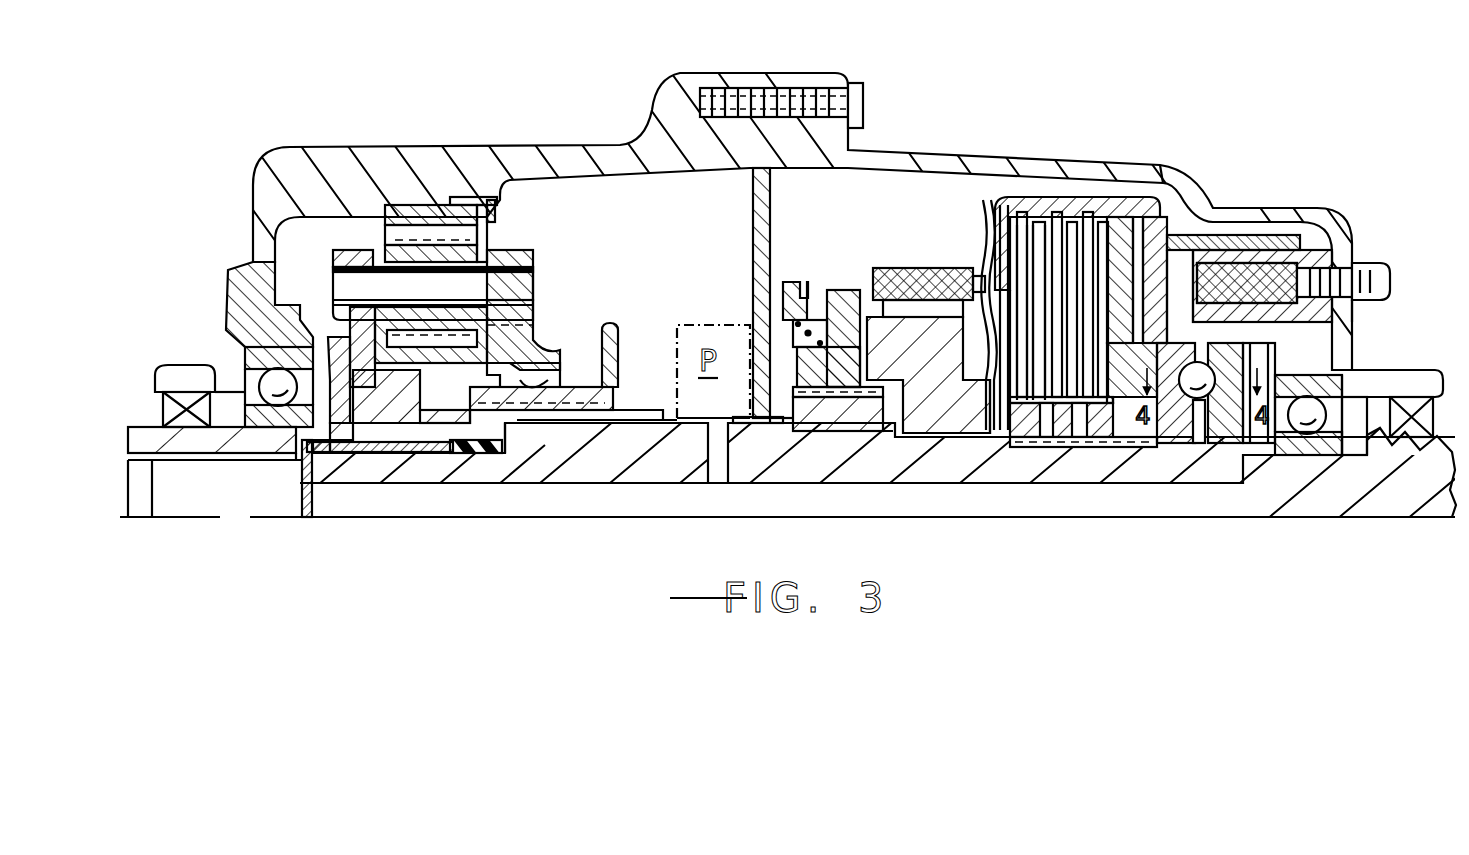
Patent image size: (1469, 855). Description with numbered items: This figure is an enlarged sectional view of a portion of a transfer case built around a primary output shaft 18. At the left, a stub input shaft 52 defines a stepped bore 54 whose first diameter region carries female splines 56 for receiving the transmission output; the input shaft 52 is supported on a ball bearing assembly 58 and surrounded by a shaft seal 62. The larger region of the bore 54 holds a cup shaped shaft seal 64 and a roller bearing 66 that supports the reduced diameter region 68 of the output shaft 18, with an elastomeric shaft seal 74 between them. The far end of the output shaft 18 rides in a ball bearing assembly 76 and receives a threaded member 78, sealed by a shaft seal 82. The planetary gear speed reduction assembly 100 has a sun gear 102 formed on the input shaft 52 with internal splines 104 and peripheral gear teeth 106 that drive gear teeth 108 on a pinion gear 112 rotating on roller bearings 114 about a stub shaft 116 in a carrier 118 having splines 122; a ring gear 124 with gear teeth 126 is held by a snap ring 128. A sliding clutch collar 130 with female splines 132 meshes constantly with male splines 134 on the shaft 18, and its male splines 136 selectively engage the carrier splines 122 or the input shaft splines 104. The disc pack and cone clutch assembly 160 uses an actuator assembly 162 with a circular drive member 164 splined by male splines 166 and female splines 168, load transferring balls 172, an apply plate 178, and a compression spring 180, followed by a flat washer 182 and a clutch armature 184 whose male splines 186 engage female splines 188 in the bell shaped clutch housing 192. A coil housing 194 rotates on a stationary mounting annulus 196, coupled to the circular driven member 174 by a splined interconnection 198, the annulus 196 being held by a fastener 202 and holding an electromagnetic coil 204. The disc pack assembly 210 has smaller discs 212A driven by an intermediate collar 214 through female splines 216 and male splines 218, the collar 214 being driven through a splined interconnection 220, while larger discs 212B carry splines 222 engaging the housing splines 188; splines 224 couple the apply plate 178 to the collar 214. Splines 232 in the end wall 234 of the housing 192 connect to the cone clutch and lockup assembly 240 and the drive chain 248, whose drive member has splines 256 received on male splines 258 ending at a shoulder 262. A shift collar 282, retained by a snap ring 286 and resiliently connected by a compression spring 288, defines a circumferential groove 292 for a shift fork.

The primary output shaft 18 is at (800, 490).
The stub input shaft 52 is at (165, 470).
The stepped bore 54 is at (222, 500).
The female splines or gear teeth 56 is at (245, 455).
The ball bearing assembly 58 is at (235, 300).
The shaft seal 62 is at (152, 397).
The cup shaped shaft seal 64 is at (300, 493).
The roller bearing 66 is at (345, 462).
The reduced diameter region 68 is at (428, 460).
The elastomeric shaft seal 74 is at (490, 470).
The ball bearing assembly 76 is at (1310, 458).
The threaded member 78 is at (1368, 458).
The shaft seal 82 is at (1432, 455).
The planetary gear speed reduction assembly 100 is at (243, 148).
The sun gear 102 is at (415, 445).
The female involute splines or gear teeth 104 is at (352, 422).
The gear teeth 106 is at (535, 307).
The gear teeth 108 is at (505, 268).
The pinion gear 112 is at (515, 292).
The roller bearings 114 is at (485, 245).
The stub shaft 116 is at (340, 290).
The carrier 118 is at (613, 350).
The female involute splines or gear teeth 122 is at (613, 380).
The ring gear 124 is at (410, 205).
The gear teeth 126 is at (443, 245).
The snap ring 128 is at (520, 205).
The sliding clutch collar 130 is at (578, 455).
The female involute splines or gear teeth 132 is at (500, 445).
The male splines or gear teeth 134 is at (625, 422).
The male splines or gear teeth 136 is at (612, 325).
The disc pack and cone clutch assembly 160 is at (1245, 80).
The actuator assembly 162 is at (1290, 190).
The circular drive member 164 is at (1197, 447).
The male splines or gear teeth 166 is at (1158, 447).
The female involute splines or gear teeth 168 is at (1193, 445).
The load transferring balls 172 is at (1230, 445).
The circular driven member 174 is at (1255, 447).
The apply plate 178 is at (1152, 175).
The compression spring 180 is at (1130, 450).
The circular flat washer 182 is at (1212, 220).
The clutch armature 184 is at (1178, 250).
The male splines or gear teeth 186 is at (1160, 230).
The female involute splines or gear teeth 188 is at (1120, 250).
The bell shaped clutch housing 192 is at (1035, 225).
The circular coil housing 194 is at (1300, 240).
The stationary mounting annulus 196 is at (1355, 265).
The splined interconnection 198 is at (1352, 364).
The fastener 202 is at (1385, 292).
The electromagnetic coil 204 is at (1330, 240).
The disc pack assembly 210 is at (1108, 100).
The smaller diameter discs 212A is at (1010, 435).
The larger diameter discs 212B is at (1105, 100).
The intermediate collar 214 is at (1070, 440).
The female splines 216 is at (1100, 440).
The male splines 218 is at (920, 300).
The splined interconnection 220 is at (1035, 440).
The splines 222 is at (1060, 215).
The female involute splines or gear teeth 224 is at (1125, 447).
The female involute splines or gear teeth 232 is at (975, 330).
The radially extending end wall 234 is at (1004, 290).
The cone clutch and lockup assembly 240 is at (905, 250).
The drive chain 248 is at (893, 268).
The female involute gear teeth splines 256 is at (795, 465).
The male splines 258 is at (838, 470).
The shoulder or stop 262 is at (765, 470).
The shift collar 282 is at (752, 242).
The snap ring 286 is at (845, 292).
The compression spring 288 is at (790, 340).
The circumferential groove 292 is at (805, 288).